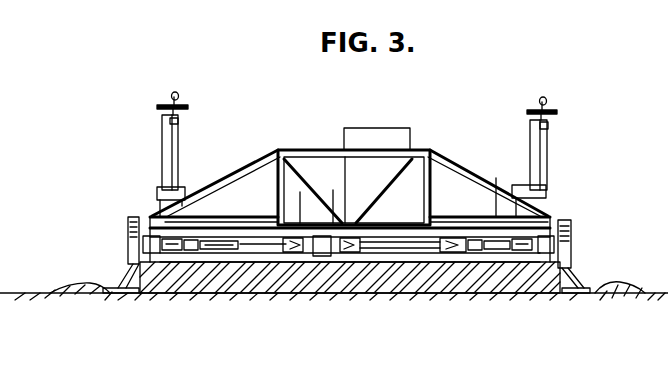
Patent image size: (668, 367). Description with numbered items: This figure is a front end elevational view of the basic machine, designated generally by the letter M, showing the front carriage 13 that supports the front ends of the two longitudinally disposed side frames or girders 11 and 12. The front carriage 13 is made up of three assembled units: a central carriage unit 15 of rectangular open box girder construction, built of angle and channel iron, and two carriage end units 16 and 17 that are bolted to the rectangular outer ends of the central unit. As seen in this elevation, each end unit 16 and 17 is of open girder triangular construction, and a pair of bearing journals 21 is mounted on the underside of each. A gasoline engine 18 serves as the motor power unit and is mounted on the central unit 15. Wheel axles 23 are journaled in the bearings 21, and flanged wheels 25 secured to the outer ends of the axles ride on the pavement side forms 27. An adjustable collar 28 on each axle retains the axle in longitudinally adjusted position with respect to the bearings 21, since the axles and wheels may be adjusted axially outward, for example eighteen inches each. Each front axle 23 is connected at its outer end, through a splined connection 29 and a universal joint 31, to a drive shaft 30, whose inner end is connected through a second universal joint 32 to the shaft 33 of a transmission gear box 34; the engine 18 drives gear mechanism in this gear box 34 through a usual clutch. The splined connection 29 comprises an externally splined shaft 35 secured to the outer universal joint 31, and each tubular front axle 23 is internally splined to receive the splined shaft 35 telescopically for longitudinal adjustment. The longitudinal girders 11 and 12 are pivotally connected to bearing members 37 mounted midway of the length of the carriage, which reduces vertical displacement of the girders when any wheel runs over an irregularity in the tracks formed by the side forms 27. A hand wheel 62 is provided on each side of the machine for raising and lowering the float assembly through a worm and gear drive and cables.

The side frame or girder 11 is at (165, 138).
The side frame or girder 12 is at (535, 150).
The front carriage 13 is at (546, 218).
The central carriage unit 15 is at (307, 152).
The carriage end unit 16 is at (240, 176).
The carriage end unit 17 is at (462, 176).
The gasoline engine 18 is at (372, 142).
The bearing journals 21 is at (160, 262).
The wheel axle 23 is at (505, 262).
The flanged wheel 25 is at (128, 226).
The pavement side form 27 is at (126, 280).
The adjustable collar 28 is at (188, 262).
The splined connection 29 is at (222, 262).
The drive shaft 30 is at (398, 262).
The universal joint 31 is at (442, 262).
The second universal joint 32 is at (348, 262).
The shaft 33 is at (292, 262).
The transmission gear box 34 is at (318, 262).
The externally splined shaft 35 is at (460, 225).
The bearing member 37 is at (158, 196).
The hand wheel 62 is at (157, 106).
The machine M is at (566, 189).